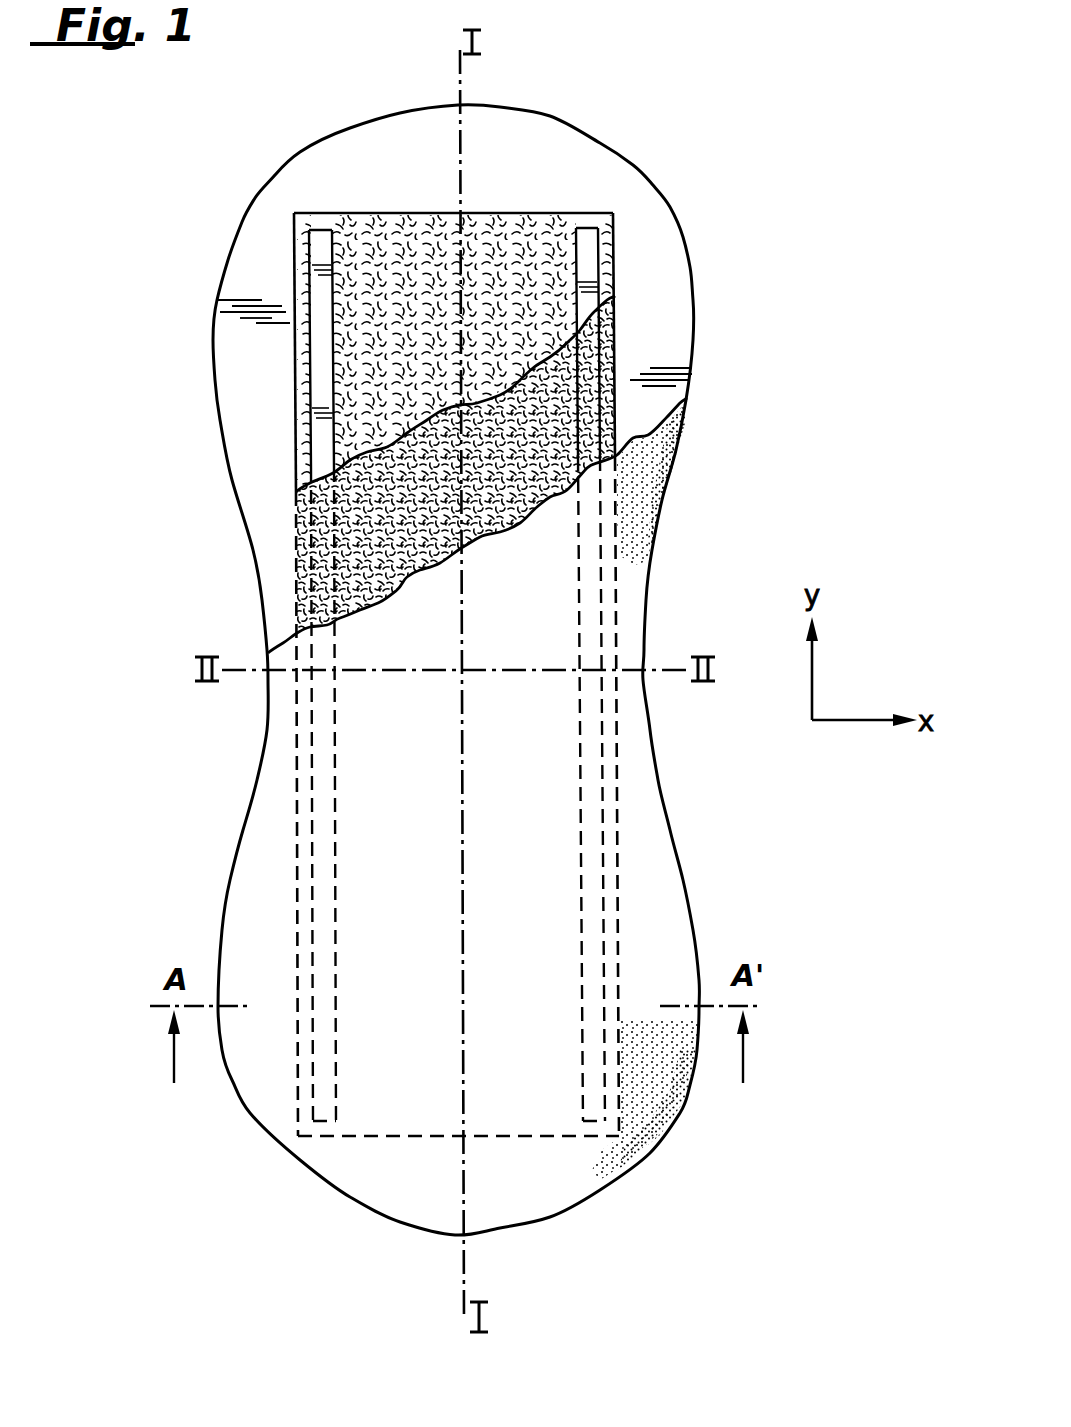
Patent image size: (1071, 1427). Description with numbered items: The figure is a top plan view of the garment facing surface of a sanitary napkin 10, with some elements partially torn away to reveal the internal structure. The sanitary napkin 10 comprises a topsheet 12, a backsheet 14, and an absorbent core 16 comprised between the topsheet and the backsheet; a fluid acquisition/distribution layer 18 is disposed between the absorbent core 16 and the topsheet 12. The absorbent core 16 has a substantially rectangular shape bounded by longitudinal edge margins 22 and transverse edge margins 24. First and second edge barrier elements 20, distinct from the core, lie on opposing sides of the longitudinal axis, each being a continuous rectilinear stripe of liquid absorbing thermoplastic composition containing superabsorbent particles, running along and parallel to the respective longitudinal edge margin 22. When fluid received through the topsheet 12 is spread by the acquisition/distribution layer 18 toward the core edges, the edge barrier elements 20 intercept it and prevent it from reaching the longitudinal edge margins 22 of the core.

The sanitary napkin 10 is at (693, 85).
The topsheet 12 is at (665, 457).
The backsheet 14 is at (665, 352).
The absorbent core 16 is at (554, 237).
The fluid acquisition/distribution layer 18 is at (340, 525).
The edge barrier element 20 is at (320, 372).
The longitudinal edge margin 22 is at (291, 289).
The transverse edge margin 24 is at (390, 210).